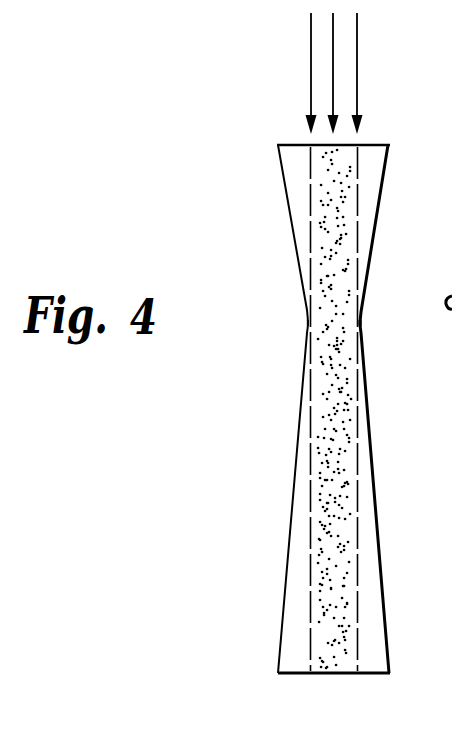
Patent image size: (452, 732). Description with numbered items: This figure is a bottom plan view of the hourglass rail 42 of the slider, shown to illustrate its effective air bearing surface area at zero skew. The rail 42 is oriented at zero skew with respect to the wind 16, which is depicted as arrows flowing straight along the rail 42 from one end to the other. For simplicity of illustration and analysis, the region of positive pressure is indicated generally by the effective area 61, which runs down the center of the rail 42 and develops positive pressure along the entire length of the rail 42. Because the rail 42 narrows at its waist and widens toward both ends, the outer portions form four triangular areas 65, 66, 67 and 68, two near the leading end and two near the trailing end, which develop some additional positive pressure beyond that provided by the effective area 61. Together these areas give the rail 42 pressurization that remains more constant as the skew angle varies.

The wind 16 is at (372, 88).
The hourglass rail 42 is at (327, 409).
The effective area 61 is at (332, 351).
The triangular area 65 is at (291, 168).
The triangular area 66 is at (372, 175).
The triangular area 67 is at (297, 600).
The triangular area 68 is at (370, 621).